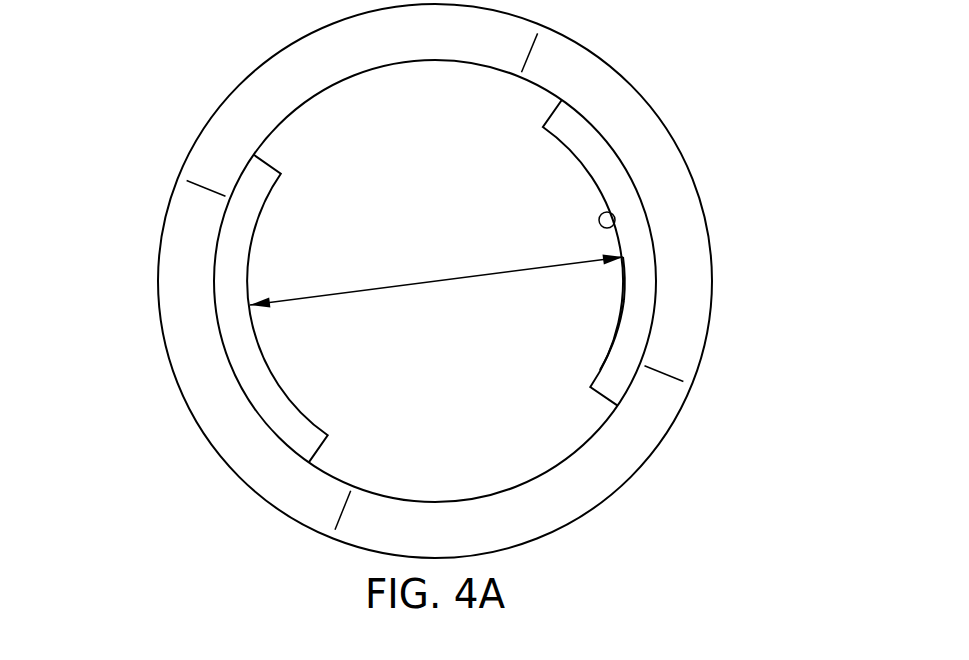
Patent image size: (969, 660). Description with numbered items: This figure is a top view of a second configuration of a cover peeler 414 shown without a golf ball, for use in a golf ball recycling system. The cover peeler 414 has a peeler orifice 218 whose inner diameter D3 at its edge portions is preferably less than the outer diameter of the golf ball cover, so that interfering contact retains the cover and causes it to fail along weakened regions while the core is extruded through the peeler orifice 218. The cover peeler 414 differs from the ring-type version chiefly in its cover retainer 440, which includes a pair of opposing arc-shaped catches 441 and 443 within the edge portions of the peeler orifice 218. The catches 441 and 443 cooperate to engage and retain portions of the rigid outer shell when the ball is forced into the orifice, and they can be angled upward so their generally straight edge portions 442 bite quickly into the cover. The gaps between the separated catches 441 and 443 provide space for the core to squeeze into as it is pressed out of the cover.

The cover peeler 414 is at (681, 83).
The peeler orifice 218 is at (296, 251).
The cover retainer 440 is at (660, 279).
The arc-shaped catch 441 is at (265, 388).
The edge portions 442 is at (618, 230).
The arc-shaped catch 443 is at (633, 342).
The inner diameter D3 is at (477, 278).